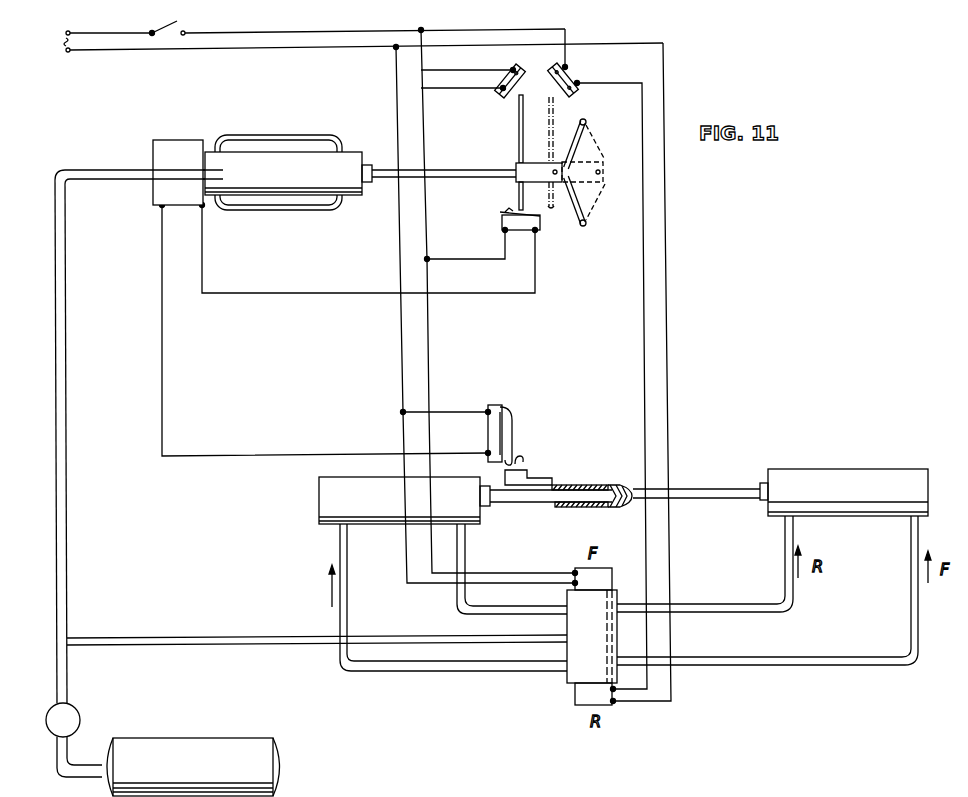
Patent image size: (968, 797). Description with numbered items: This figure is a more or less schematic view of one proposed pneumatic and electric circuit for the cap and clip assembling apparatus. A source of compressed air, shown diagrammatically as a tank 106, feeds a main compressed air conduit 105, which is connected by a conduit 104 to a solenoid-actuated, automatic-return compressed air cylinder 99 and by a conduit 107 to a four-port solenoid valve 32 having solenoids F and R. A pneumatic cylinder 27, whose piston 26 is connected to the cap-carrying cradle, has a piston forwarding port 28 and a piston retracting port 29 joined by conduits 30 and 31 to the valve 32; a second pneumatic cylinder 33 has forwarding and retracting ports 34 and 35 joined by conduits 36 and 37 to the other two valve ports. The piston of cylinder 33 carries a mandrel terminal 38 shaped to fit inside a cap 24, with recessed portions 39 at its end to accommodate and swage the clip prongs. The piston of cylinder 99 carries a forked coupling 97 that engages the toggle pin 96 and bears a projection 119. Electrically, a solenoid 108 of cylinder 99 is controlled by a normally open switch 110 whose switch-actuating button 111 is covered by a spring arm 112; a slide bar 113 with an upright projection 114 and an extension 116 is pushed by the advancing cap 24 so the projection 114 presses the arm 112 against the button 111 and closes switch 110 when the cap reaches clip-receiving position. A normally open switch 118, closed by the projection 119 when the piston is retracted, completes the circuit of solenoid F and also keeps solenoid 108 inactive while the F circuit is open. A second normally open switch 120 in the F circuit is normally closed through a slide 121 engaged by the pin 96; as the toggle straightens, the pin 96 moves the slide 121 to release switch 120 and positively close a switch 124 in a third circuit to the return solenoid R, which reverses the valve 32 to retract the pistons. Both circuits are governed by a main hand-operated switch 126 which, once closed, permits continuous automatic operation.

The cap 24 is at (560, 509).
The piston 26 is at (690, 488).
The pneumatic cylinder 27 is at (801, 471).
The piston forwarding port 28 is at (920, 518).
The piston retracting port 29 is at (783, 528).
The conduit 30 is at (770, 666).
The conduit 31 is at (697, 615).
The four-port solenoid valve 32 is at (610, 629).
The second pneumatic cylinder 33 is at (319, 519).
The piston forwarding port 34 is at (339, 540).
The piston retracting port 35 is at (481, 523).
The conduit 36 is at (338, 556).
The conduit 37 is at (457, 599).
The mandrel terminal 38 is at (545, 507).
The recessed portions 39 is at (622, 486).
The pin 96 is at (556, 186).
The forked coupling 97 is at (520, 164).
The compressed air cylinder 99 is at (245, 155).
The conduit 104 is at (124, 173).
The main compressed air conduit 105 is at (70, 582).
The source of compressed air 106 is at (245, 738).
The conduit 107 is at (253, 636).
The solenoid 108 is at (196, 126).
The normally open switch 110 is at (503, 407).
The switch-actuating button 111 is at (513, 426).
The spring arm 112 is at (516, 446).
The slide bar 113 is at (531, 478).
The upright projection 114 is at (525, 459).
The extension 116 is at (562, 485).
The normally open switch 118 is at (500, 228).
The projection 119 is at (547, 198).
The normally open switch 120 is at (508, 66).
The slide 121 is at (550, 125).
The switch 124 is at (567, 85).
The main hand-operated switch 126 is at (171, 25).